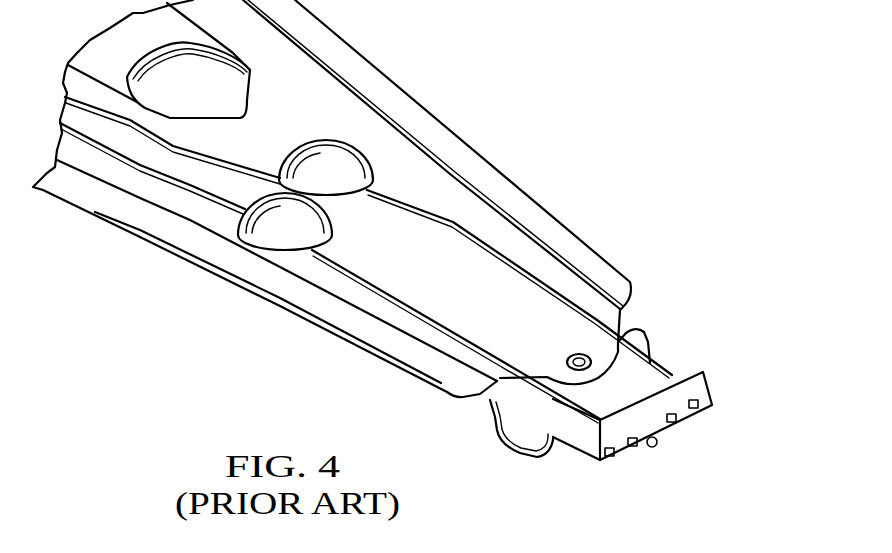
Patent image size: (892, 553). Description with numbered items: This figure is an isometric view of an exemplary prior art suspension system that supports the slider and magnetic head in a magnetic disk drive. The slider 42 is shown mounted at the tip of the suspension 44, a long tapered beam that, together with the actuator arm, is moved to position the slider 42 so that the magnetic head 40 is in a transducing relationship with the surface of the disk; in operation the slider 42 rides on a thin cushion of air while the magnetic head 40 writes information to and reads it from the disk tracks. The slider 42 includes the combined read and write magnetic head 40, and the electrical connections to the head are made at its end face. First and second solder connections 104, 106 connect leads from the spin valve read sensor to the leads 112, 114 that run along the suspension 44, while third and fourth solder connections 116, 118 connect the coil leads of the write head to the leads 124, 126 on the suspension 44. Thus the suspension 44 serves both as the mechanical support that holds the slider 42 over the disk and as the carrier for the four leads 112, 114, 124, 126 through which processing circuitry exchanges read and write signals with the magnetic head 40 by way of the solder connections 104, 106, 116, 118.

The suspension 44 is at (482, 150).
The slider 42 is at (533, 471).
The lead 114 is at (535, 273).
The lead 126 is at (455, 223).
The lead 124 is at (382, 290).
The lead 112 is at (367, 280).
The first solder connection 104 is at (600, 460).
The second solder connection 106 is at (698, 402).
The third solder connection 116 is at (631, 446).
The fourth solder connection 118 is at (675, 422).
The magnetic head 40 is at (654, 450).